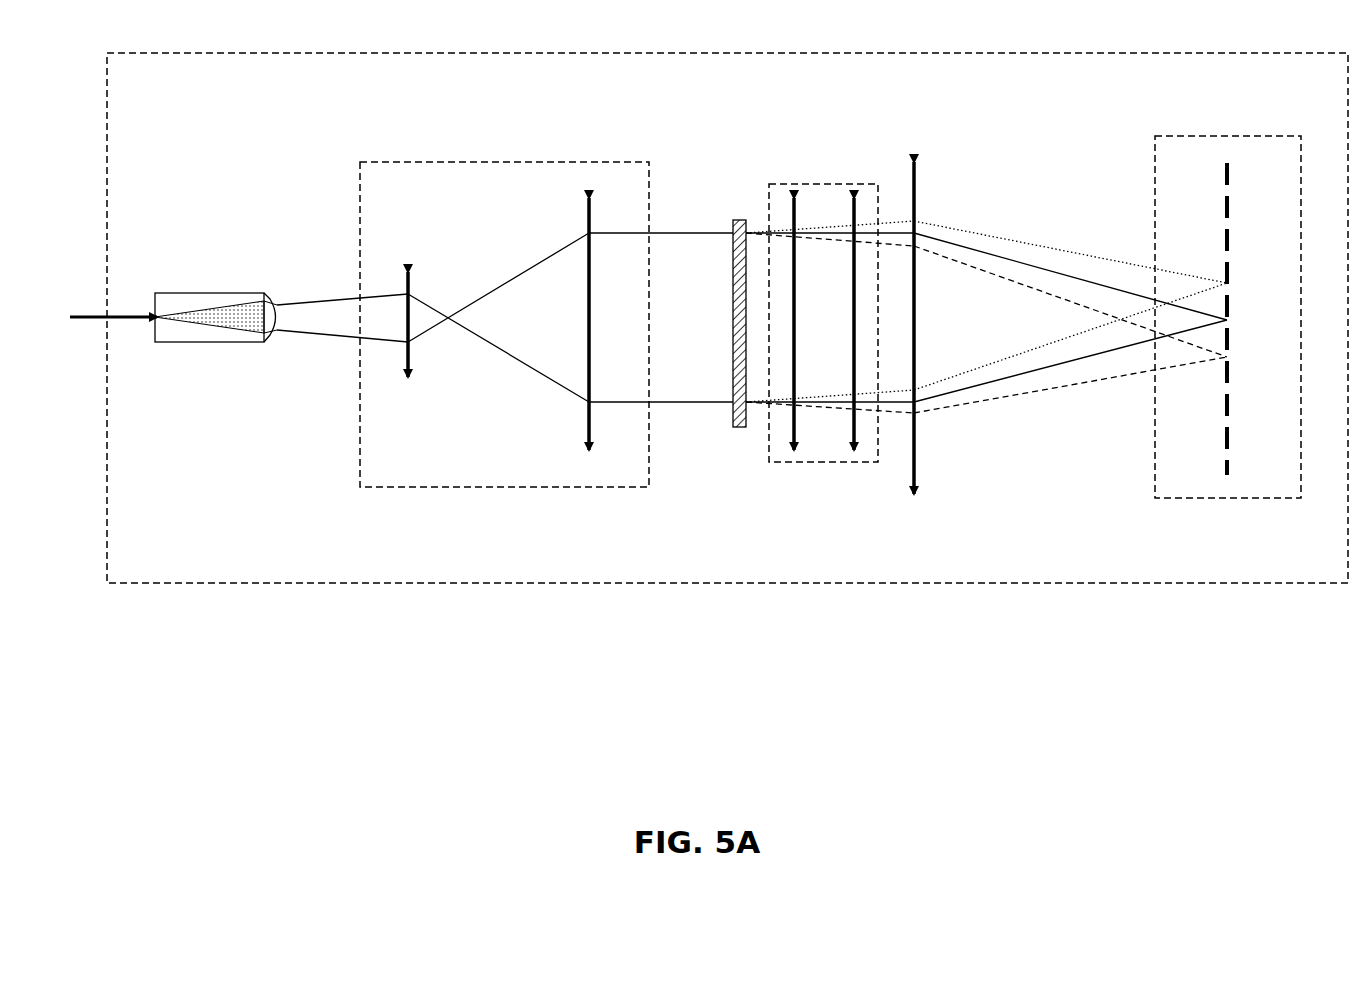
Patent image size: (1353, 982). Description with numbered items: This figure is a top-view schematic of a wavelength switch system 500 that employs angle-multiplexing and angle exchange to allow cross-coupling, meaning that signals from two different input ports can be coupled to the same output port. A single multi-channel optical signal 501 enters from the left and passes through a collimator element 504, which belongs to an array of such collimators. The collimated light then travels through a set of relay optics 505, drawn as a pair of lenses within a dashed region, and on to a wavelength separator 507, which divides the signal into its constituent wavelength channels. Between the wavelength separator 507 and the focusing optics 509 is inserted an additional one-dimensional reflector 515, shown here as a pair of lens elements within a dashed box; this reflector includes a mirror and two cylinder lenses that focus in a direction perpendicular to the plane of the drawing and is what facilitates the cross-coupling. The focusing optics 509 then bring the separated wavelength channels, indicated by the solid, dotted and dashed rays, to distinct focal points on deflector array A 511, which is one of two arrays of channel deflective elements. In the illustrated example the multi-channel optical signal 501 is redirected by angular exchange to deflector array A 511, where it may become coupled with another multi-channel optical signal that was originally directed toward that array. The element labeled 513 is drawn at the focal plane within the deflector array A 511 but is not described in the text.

The wavelength switch system 500 is at (181, 584).
The multi-channel optical signal 501 is at (86, 311).
The collimator element 504 is at (215, 293).
The relay optics 505 is at (480, 488).
The wavelength separator 507 is at (738, 428).
The focusing optics 509 is at (917, 498).
The deflector array A 511 is at (1228, 499).
The detector plane 513 is at (1230, 410).
The one-dimensional reflector 515 is at (826, 184).